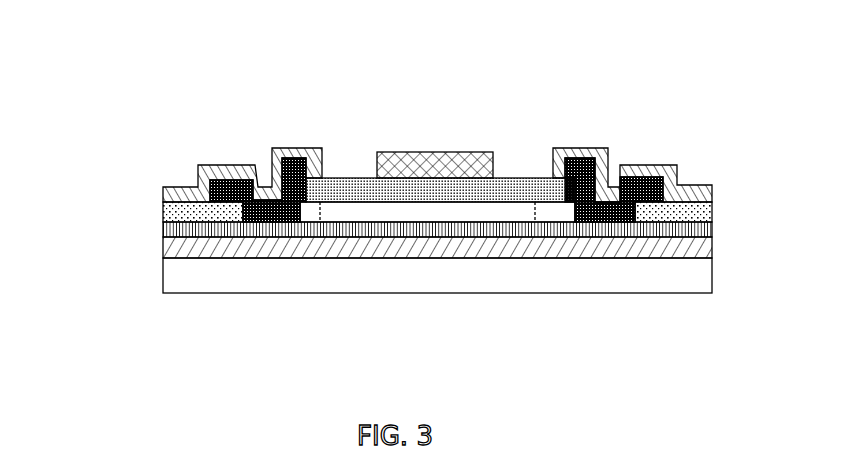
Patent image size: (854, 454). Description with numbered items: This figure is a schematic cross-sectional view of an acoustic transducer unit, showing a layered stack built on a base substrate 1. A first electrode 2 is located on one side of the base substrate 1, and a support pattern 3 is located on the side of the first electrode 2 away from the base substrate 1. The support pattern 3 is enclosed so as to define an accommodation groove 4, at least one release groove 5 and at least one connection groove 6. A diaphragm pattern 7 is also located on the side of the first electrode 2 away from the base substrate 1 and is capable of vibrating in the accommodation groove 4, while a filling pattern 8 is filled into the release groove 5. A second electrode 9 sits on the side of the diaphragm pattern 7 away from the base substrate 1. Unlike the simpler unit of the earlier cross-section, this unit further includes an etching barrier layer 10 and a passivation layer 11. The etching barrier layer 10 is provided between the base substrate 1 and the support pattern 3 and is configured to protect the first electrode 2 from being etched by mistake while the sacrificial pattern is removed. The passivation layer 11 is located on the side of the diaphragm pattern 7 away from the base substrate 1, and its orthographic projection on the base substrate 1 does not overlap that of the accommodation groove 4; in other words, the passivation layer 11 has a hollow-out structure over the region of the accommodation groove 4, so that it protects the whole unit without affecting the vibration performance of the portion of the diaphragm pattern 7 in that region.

The base substrate 1 is at (163, 280).
The first electrode 2 is at (163, 252).
The support pattern 3 is at (163, 212).
The accommodation groove 4 is at (400, 210).
The release groove 5 is at (268, 220).
The connection groove 6 is at (323, 220).
The diaphragm pattern 7 is at (357, 181).
The filling pattern 8 is at (580, 165).
The second electrode 9 is at (448, 163).
The etching barrier layer 10 is at (163, 231).
The passivation layer 11 is at (197, 170).